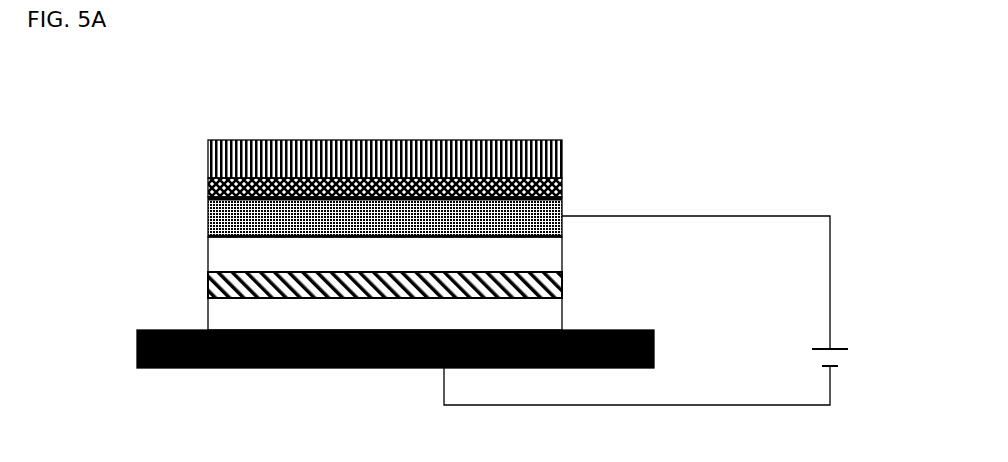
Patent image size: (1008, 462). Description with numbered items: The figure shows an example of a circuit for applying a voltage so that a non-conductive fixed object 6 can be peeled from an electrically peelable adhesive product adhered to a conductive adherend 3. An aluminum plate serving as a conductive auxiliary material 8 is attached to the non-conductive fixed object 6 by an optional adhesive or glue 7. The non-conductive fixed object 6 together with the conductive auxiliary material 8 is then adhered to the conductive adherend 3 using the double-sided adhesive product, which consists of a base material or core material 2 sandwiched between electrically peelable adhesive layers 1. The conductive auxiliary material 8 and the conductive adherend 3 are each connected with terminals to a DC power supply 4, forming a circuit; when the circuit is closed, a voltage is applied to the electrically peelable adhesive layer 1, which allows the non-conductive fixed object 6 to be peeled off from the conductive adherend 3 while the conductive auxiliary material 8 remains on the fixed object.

The electrically peelable adhesive layer 1 is at (207, 254).
The base material or core material 2 is at (207, 285).
The conductive adherend 3 is at (135, 345).
The DC power supply 4 is at (848, 333).
The non-conductive fixed object 6 is at (248, 140).
The optional adhesive or glue 7 is at (205, 183).
The conductive auxiliary material 8 is at (205, 217).